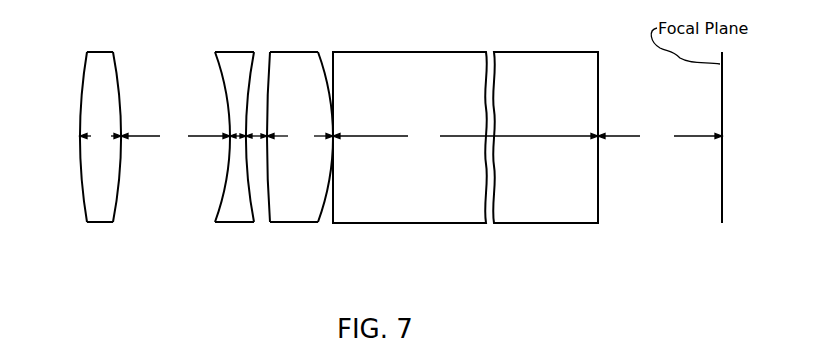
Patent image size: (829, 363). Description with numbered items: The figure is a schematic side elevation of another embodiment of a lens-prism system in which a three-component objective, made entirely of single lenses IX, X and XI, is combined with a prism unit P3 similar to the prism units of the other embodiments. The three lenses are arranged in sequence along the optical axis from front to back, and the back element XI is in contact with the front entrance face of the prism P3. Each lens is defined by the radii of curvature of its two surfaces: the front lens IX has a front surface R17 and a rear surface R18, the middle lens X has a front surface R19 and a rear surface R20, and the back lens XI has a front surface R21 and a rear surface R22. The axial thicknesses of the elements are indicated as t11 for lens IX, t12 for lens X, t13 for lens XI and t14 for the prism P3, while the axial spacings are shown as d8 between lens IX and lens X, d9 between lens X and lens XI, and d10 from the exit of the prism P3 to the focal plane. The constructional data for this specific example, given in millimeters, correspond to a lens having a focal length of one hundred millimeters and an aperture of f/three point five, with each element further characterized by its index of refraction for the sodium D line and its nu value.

The single lens IX is at (98, 132).
The single lens X is at (211, 132).
The back element XI is at (314, 143).
The prism unit P3 is at (428, 53).
The radius of curvature R17 is at (65, 155).
The radius of curvature R18 is at (116, 211).
The radius of curvature R19 is at (198, 137).
The radius of curvature R20 is at (257, 211).
The radius of curvature R21 is at (288, 167).
The radius of curvature R22 is at (322, 211).
The thickness t11 is at (100, 138).
The thickness t12 is at (236, 133).
The thickness t13 is at (300, 138).
The thickness t14 is at (465, 138).
The spacing d8 is at (175, 138).
The spacing d9 is at (257, 134).
The spacing d10 is at (660, 138).